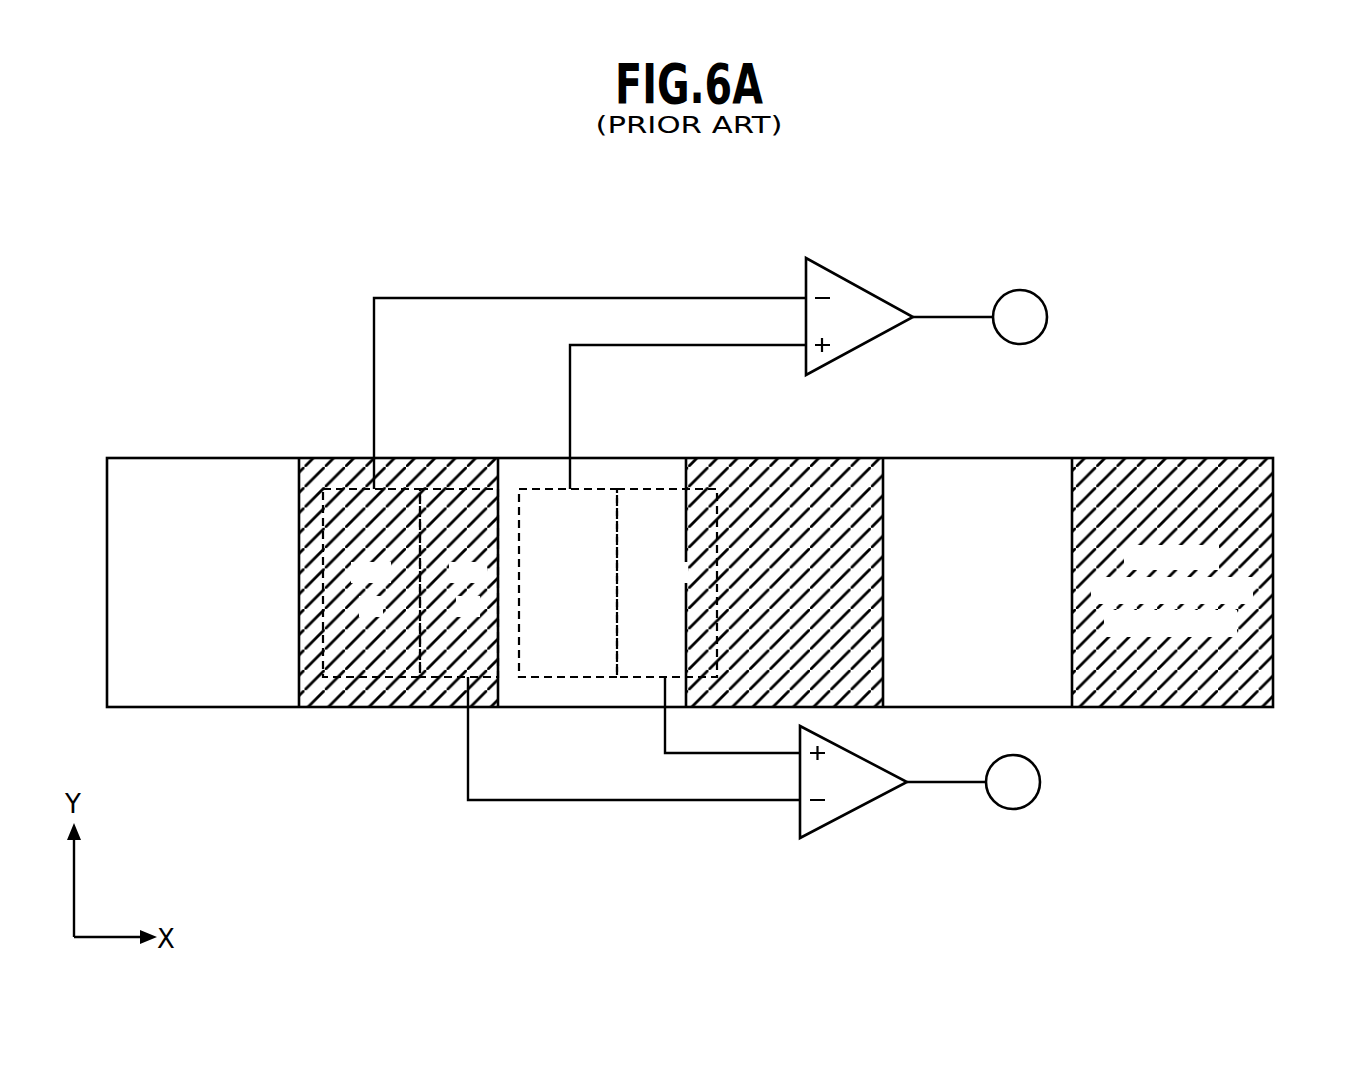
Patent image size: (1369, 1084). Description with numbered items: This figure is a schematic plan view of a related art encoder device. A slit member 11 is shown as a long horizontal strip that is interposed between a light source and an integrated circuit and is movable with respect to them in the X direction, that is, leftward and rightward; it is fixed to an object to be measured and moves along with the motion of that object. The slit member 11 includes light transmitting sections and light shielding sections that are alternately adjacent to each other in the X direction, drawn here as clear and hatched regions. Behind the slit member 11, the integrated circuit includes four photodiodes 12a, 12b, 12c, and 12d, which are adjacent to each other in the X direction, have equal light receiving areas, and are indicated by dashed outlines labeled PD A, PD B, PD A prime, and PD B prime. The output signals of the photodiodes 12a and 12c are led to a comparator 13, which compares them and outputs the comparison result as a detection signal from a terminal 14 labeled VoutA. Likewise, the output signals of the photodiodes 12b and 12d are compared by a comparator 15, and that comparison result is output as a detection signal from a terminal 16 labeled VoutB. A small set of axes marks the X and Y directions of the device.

The slit member 11 is at (1273, 530).
The photodiode 12a is at (343, 485).
The photodiode 12b is at (430, 485).
The photodiode 12c is at (530, 485).
The photodiode 12d is at (640, 485).
The comparator 13 is at (806, 270).
The terminal 14 is at (1020, 290).
The comparator 15 is at (800, 826).
The terminal 16 is at (1013, 809).